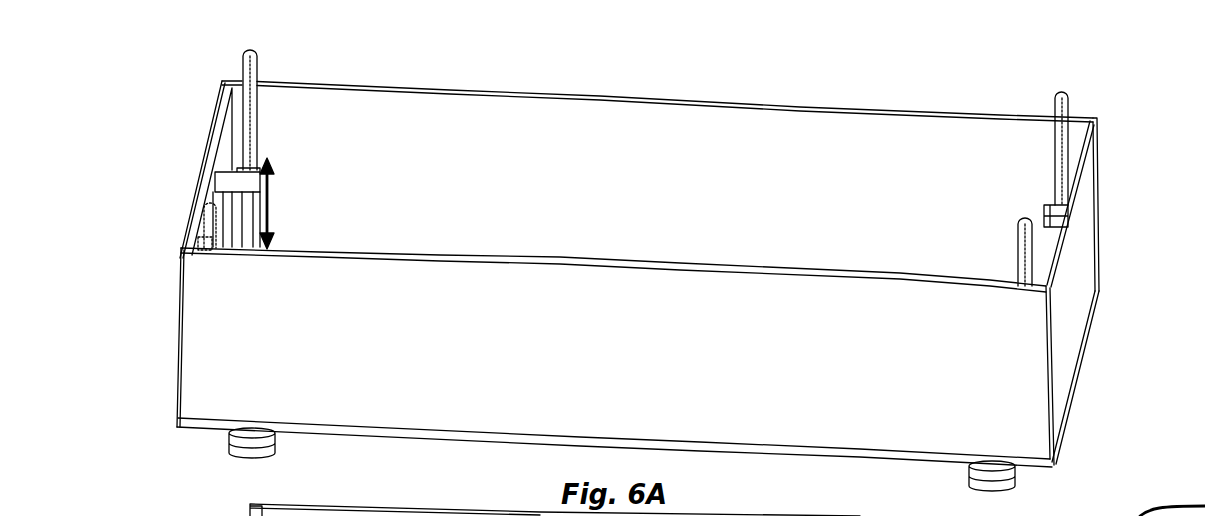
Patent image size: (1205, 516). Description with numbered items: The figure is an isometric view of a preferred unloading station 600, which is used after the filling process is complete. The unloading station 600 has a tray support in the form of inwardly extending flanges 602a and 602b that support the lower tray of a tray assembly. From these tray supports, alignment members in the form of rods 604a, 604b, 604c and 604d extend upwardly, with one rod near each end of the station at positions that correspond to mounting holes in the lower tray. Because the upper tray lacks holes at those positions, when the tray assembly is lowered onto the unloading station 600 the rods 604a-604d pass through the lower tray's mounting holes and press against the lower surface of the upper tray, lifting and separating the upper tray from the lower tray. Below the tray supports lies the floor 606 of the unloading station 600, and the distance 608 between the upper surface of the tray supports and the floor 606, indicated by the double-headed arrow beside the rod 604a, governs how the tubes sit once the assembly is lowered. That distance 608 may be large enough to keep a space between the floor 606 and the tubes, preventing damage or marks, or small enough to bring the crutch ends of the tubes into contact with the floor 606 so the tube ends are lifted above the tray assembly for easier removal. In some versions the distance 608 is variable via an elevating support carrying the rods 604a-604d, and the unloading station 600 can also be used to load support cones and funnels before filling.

The unloading station 600 is at (617, 265).
The inwardly extending flange 602a is at (237, 177).
The inwardly extending flange 602b is at (1050, 213).
The rod 604a is at (254, 70).
The rod 604b is at (1053, 110).
The rod 604c is at (1028, 250).
The rod 604d is at (211, 215).
The floor 606 is at (472, 253).
The distance 608 is at (267, 203).